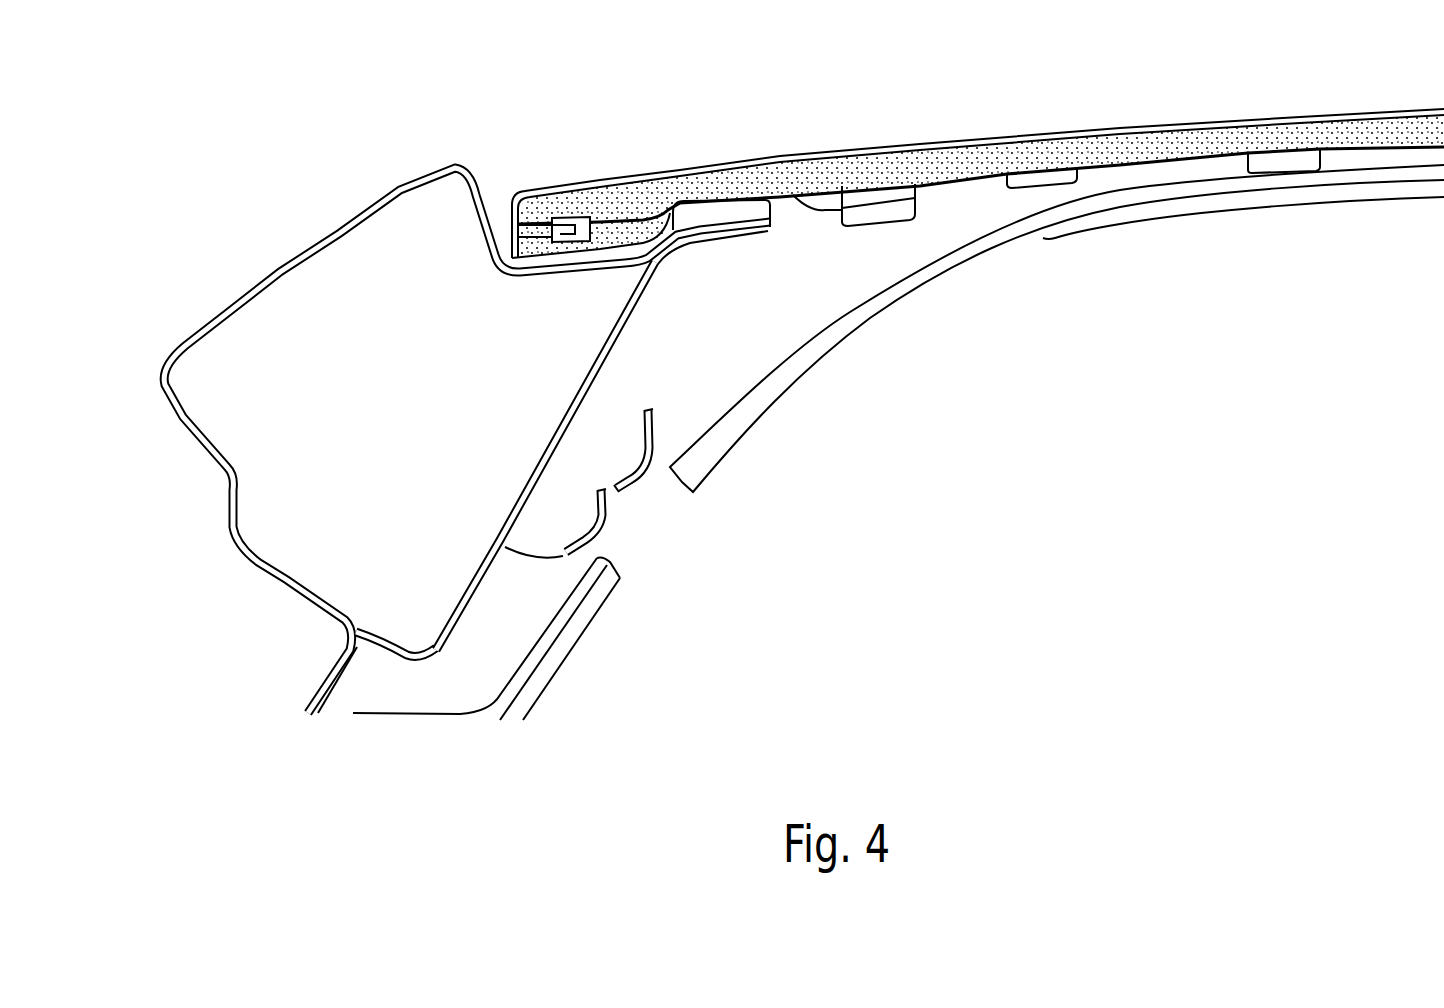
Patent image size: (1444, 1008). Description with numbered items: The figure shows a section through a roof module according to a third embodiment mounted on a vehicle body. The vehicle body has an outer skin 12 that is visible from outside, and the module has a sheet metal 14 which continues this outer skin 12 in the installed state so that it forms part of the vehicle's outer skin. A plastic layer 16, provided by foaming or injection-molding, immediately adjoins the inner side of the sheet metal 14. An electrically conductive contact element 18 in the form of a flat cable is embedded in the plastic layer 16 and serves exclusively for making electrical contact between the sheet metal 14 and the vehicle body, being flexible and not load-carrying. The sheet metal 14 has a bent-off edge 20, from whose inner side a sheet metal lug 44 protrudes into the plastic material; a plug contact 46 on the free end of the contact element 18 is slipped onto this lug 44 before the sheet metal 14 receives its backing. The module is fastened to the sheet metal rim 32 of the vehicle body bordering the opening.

The outer skin 12 is at (287, 258).
The sheet metal 14 is at (1083, 137).
The plastic layer 16 is at (952, 145).
The contact element 18 is at (627, 217).
The bent-off edge 20 is at (513, 220).
The sheet metal rim 32 is at (707, 215).
The sheet metal lug 44 is at (530, 227).
The plug contact 46 is at (579, 218).